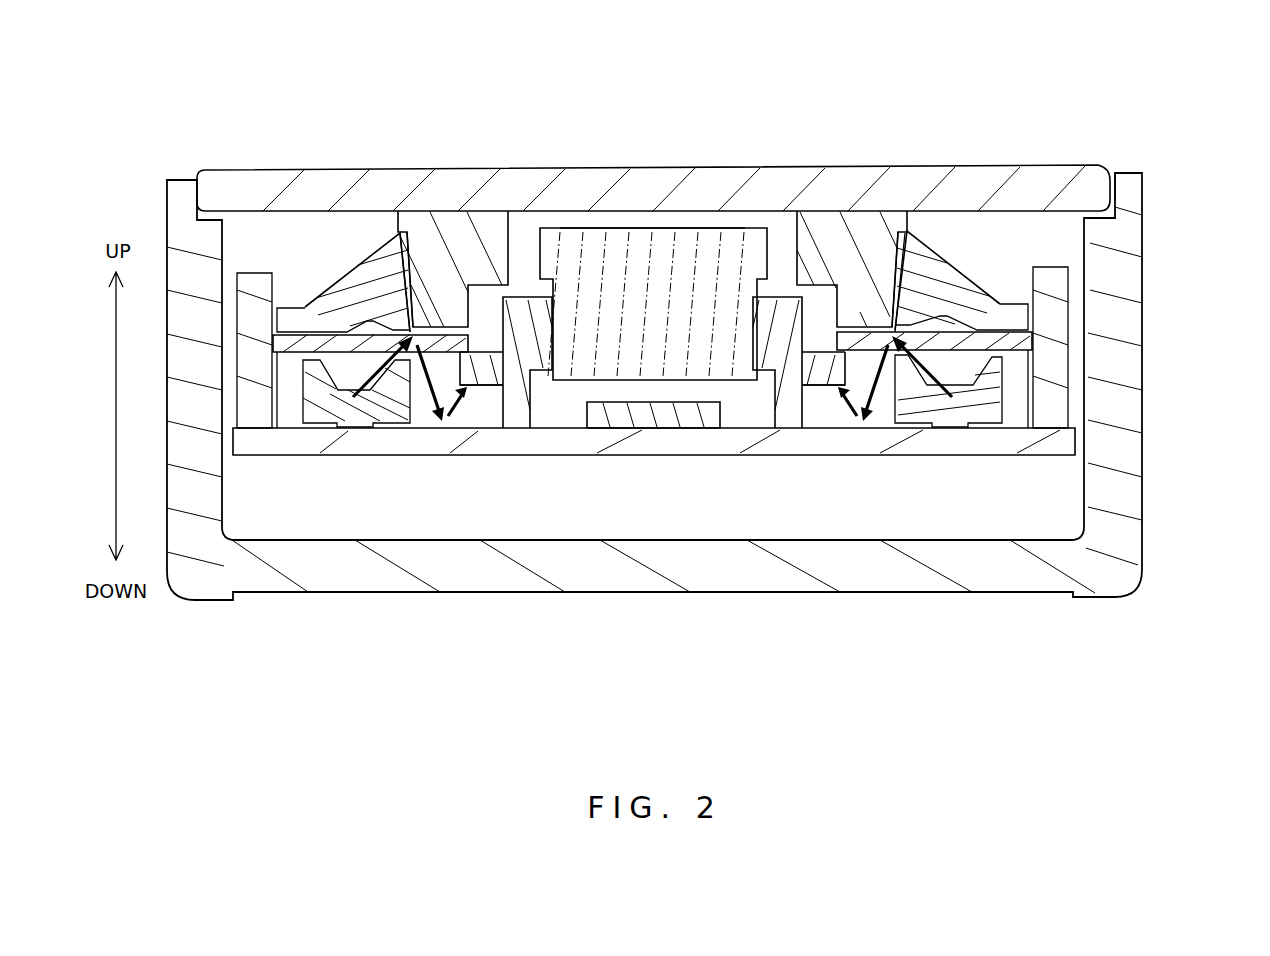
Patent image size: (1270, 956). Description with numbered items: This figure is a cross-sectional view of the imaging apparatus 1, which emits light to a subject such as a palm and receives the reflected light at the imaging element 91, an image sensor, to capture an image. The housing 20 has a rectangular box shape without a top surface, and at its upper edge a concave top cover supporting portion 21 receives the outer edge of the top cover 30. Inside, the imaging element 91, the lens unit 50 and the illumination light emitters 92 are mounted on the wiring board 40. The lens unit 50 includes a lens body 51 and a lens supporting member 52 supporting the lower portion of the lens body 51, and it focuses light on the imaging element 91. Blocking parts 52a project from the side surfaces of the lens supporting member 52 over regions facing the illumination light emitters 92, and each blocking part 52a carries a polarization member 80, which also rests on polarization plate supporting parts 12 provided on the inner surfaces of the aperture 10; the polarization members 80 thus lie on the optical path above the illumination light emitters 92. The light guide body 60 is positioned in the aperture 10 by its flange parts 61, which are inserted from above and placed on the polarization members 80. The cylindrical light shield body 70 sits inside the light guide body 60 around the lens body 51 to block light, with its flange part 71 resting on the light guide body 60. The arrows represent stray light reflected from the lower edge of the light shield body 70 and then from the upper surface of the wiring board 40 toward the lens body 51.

The imaging apparatus 1 is at (145, 143).
The aperture 10 is at (256, 257).
The polarization plate supporting part 12 is at (284, 370).
The housing 20 is at (1163, 286).
The top cover supporting portion 21 is at (1108, 181).
The top cover 30 is at (972, 177).
The wiring board 40 is at (443, 452).
The lens unit 50 is at (646, 215).
The lens body 51 is at (713, 229).
The lens supporting member 52 is at (793, 382).
The blocking part 52a is at (483, 387).
The light guide body 60 is at (371, 242).
The flange part 61 is at (293, 308).
The light shield body 70 is at (458, 197).
The flange part 71 is at (399, 231).
The polarization member 80 is at (452, 333).
The imaging element 91 is at (643, 430).
The illumination light emitter 92 is at (367, 420).